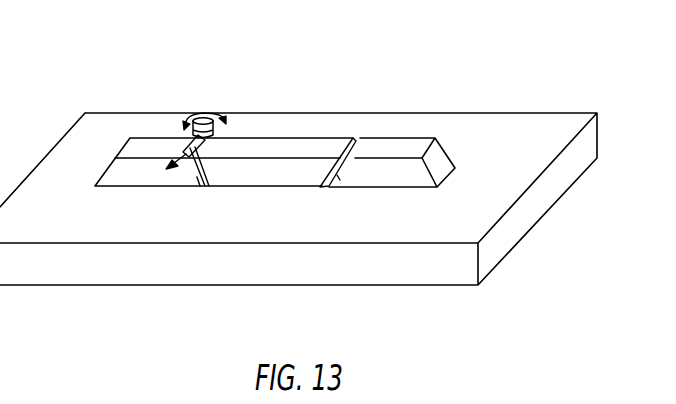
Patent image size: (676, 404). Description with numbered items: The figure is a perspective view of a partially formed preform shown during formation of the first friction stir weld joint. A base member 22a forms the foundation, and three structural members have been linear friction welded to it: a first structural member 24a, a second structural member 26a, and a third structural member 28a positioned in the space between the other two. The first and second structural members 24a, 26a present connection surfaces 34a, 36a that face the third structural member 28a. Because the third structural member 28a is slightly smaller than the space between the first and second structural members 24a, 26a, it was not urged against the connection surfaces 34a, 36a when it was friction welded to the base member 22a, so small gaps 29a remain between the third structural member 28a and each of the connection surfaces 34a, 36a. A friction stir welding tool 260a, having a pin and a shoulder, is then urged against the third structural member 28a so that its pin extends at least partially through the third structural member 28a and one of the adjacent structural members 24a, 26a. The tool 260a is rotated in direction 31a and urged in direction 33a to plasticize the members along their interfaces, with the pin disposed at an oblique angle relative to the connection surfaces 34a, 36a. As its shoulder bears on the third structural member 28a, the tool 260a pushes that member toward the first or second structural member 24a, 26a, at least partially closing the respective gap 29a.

The base member 22a is at (493, 247).
The first structural member 24a is at (117, 168).
The second structural member 26a is at (437, 160).
The third structural member 28a is at (280, 147).
The gaps 29a is at (208, 200).
The direction of rotation 31a is at (182, 118).
The direction of urging 33a is at (176, 140).
The connection surface 34a is at (197, 177).
The connection surface 36a is at (337, 175).
The friction stir welding tool 260a is at (204, 121).